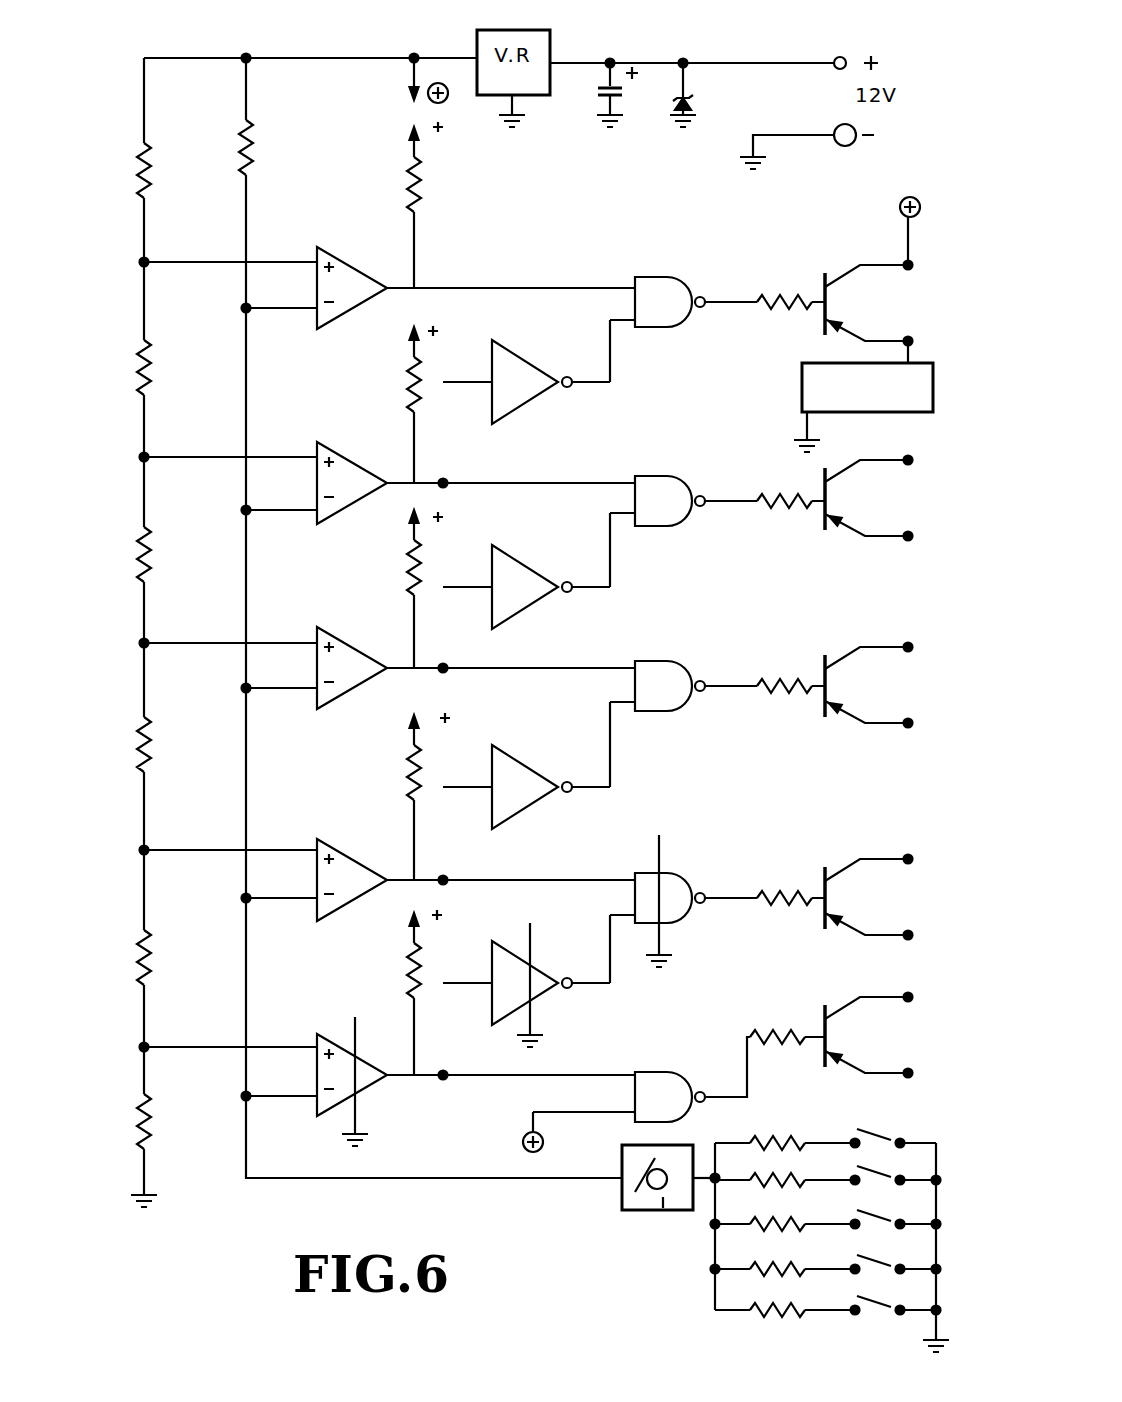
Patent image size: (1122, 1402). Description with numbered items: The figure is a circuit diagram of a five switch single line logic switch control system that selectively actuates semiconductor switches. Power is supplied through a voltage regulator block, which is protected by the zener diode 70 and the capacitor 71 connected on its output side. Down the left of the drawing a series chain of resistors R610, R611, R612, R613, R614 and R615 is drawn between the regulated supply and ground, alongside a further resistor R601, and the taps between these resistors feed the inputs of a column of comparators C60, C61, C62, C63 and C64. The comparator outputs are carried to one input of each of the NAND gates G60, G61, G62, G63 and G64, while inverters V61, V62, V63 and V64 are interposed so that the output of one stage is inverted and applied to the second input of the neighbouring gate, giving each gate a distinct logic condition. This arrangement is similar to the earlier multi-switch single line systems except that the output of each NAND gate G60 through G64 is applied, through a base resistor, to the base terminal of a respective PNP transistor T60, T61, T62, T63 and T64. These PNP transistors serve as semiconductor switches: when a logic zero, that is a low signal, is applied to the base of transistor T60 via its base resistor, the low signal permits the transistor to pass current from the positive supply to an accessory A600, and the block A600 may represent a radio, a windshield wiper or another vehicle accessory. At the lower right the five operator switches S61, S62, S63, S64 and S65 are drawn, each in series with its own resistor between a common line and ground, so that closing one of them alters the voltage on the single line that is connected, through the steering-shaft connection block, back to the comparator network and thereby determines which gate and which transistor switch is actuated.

The voltage divider resistor R610 is at (142, 170).
The reference resistor R601 is at (252, 157).
The voltage divider resistor R611 is at (140, 368).
The voltage divider resistor R612 is at (140, 545).
The voltage divider resistor R613 is at (140, 748).
The voltage divider resistor R614 is at (140, 952).
The voltage divider resistor R615 is at (140, 1115).
The capacitor 71 is at (606, 87).
The zener diode 70 is at (704, 99).
The comparator C60 is at (352, 288).
The comparator C61 is at (352, 483).
The comparator C62 is at (352, 668).
The comparator C63 is at (352, 880).
The comparator C64 is at (352, 1075).
The inverter V61 is at (526, 382).
The inverter V62 is at (526, 587).
The inverter V63 is at (526, 787).
The inverter V64 is at (526, 983).
The NAND gate G60 is at (670, 302).
The NAND gate G61 is at (670, 501).
The NAND gate G62 is at (670, 686).
The NAND gate G63 is at (670, 898).
The NAND gate G64 is at (670, 1097).
The PNP transistor T60 is at (817, 297).
The PNP transistor T61 is at (817, 510).
The PNP transistor T62 is at (820, 700).
The PNP transistor T63 is at (815, 887).
The PNP transistor T64 is at (815, 1028).
The accessory A600 is at (863, 407).
The selector switch S61 is at (882, 1134).
The selector switch S62 is at (882, 1172).
The selector switch S63 is at (883, 1217).
The selector switch S64 is at (883, 1262).
The selector switch S65 is at (878, 1308).